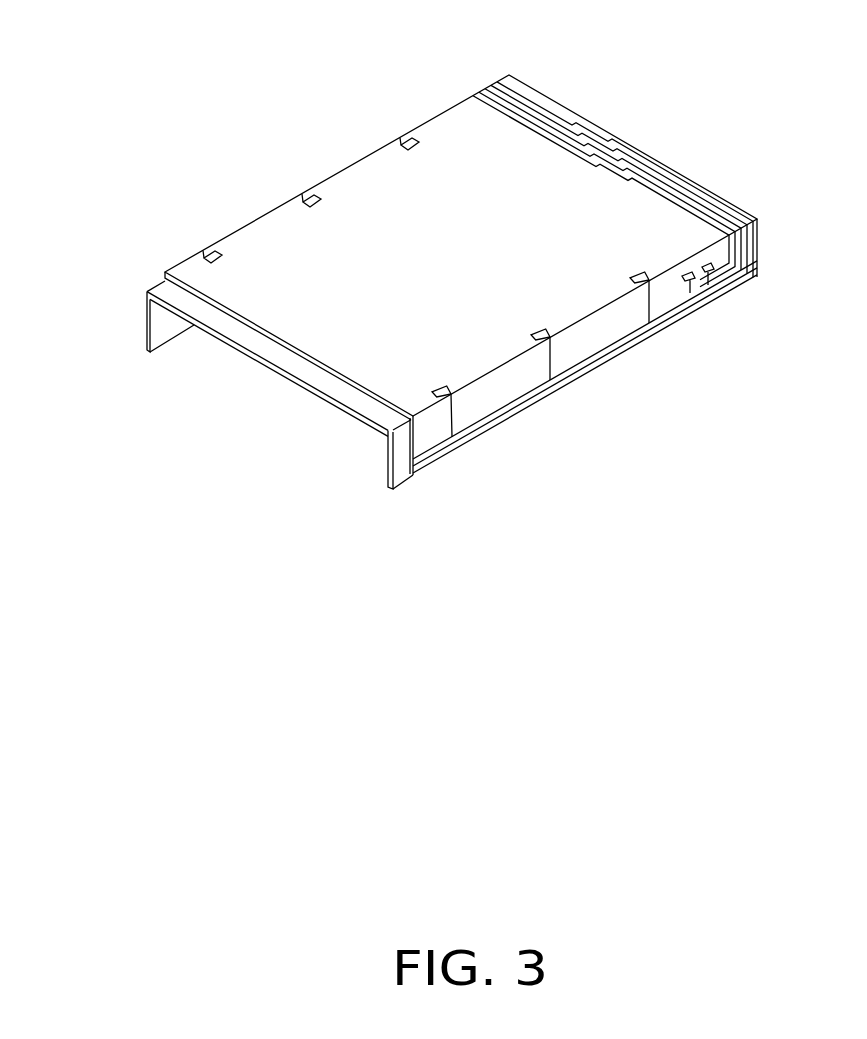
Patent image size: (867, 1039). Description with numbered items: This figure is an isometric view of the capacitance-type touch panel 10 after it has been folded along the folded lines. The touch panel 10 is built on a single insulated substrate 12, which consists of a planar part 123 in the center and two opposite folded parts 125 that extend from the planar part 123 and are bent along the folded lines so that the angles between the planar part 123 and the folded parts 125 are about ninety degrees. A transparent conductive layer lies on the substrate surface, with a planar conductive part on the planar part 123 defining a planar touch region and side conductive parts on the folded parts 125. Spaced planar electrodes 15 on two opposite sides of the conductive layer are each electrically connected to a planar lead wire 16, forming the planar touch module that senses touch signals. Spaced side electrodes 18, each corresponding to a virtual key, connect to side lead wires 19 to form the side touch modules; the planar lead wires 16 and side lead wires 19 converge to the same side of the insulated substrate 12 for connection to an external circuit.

The touch panel 10 is at (326, 93).
The insulated substrate 12 is at (276, 395).
The planar part 123 is at (245, 333).
The folded parts 125 is at (172, 325).
The planar electrodes 15 is at (551, 345).
The planar lead wires 16 is at (453, 410).
The side electrodes 18 is at (697, 271).
The side lead wires 19 is at (690, 293).